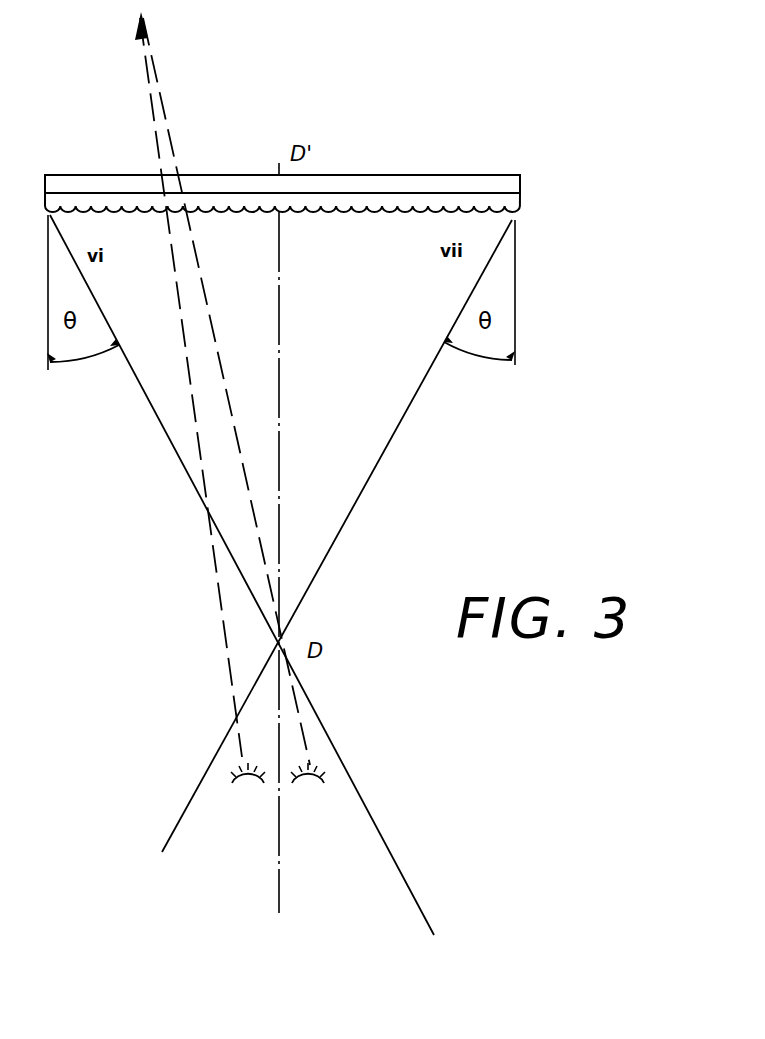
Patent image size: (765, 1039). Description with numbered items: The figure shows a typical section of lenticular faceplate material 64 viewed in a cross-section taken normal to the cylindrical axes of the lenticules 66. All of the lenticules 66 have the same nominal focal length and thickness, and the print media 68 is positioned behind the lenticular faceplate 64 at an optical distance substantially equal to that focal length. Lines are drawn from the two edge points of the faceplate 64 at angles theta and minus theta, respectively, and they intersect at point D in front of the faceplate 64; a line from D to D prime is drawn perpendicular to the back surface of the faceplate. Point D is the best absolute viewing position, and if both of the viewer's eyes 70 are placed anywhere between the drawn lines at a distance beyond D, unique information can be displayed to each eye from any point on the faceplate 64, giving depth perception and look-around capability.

The lenticular faceplate material 64 is at (521, 198).
The lenticules 66 is at (397, 212).
The print media 68 is at (521, 182).
The viewer's eyes 70 is at (279, 562).